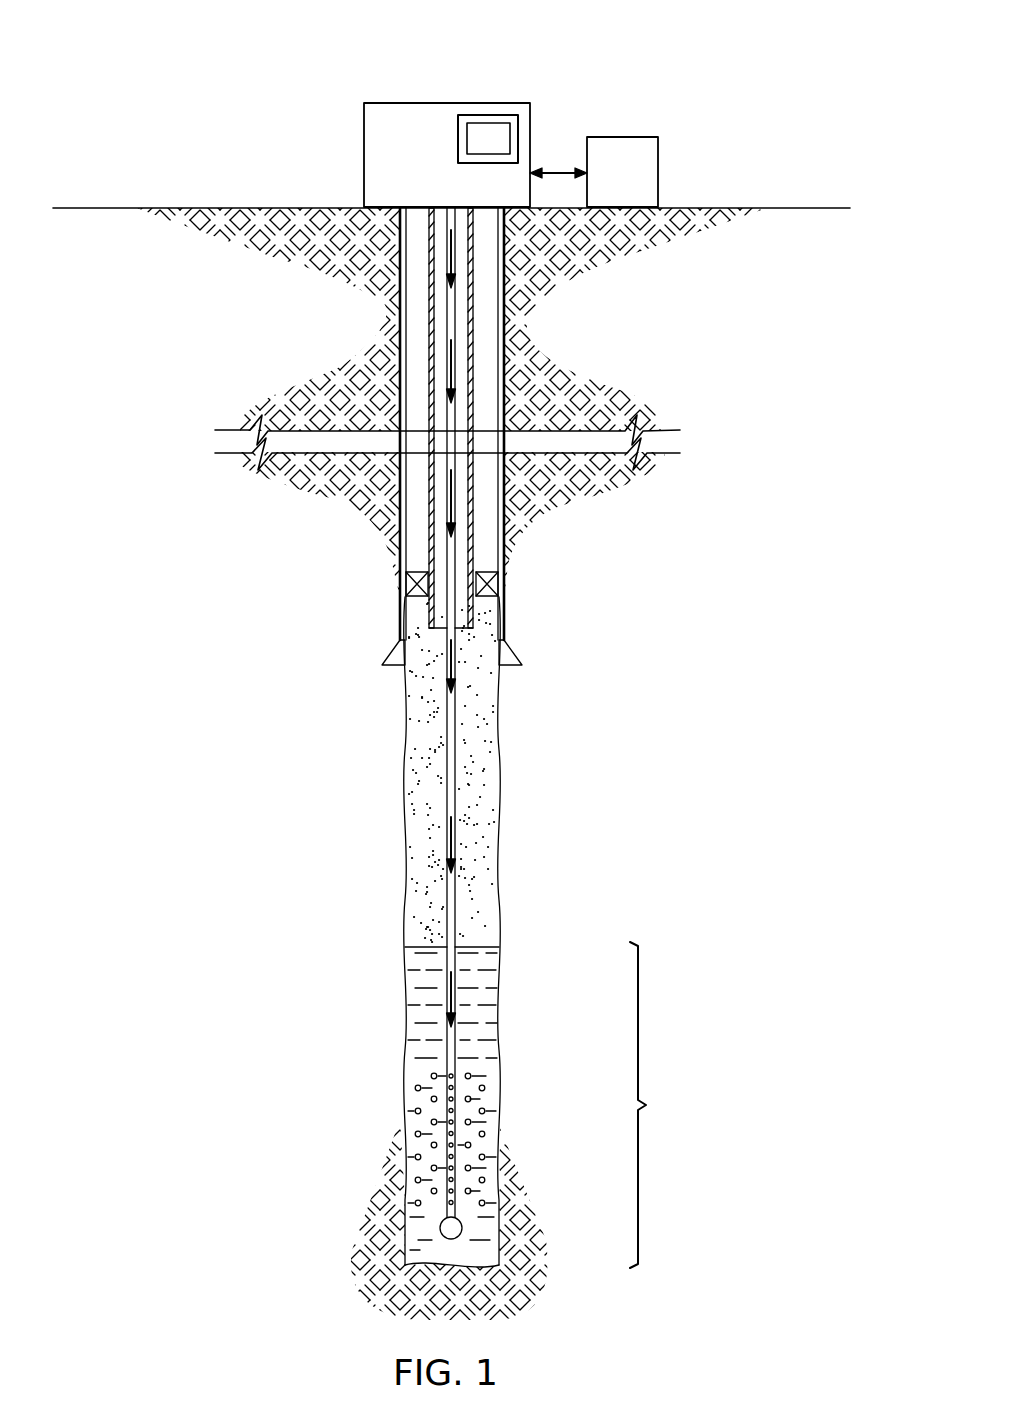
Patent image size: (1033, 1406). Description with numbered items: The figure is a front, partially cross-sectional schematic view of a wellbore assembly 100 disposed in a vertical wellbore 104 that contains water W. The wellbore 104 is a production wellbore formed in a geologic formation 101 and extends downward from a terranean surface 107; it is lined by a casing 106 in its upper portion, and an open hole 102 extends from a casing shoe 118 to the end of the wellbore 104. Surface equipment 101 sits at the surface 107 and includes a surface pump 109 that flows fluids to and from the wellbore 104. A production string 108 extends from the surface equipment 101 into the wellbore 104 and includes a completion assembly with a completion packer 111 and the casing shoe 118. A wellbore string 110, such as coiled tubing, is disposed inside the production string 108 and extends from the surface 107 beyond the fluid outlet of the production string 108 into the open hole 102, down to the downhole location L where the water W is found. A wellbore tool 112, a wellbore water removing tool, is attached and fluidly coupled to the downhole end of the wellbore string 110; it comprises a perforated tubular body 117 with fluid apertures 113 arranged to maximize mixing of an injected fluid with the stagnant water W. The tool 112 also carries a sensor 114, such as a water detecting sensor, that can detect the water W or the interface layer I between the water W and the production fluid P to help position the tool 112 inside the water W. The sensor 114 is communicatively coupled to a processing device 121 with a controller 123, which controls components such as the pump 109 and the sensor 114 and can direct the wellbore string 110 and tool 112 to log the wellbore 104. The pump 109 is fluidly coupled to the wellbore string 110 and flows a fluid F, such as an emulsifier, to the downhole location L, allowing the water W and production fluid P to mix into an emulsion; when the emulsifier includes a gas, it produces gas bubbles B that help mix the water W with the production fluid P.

The wellbore assembly 100 is at (212, 78).
The surface equipment 101 is at (364, 157).
The open hole 102 is at (388, 776).
The wellbore 104 is at (305, 348).
The casing 106 is at (500, 511).
The surface 107 is at (722, 207).
The production string 108 is at (472, 320).
The surface pump 109 is at (623, 137).
The wellbore string 110 is at (447, 327).
The completion packer 111 is at (406, 583).
The wellbore tool 112 is at (447, 1062).
The fluid apertures 113 is at (443, 1150).
The sensor 114 is at (465, 1220).
The perforated tubular body 117 is at (456, 1110).
The casing shoe 118 is at (392, 648).
The processing device 121 is at (502, 115).
The controller 123 is at (466, 137).
The fluid F is at (447, 502).
The production fluid P is at (472, 824).
The interface layer I is at (427, 945).
The water W is at (472, 1004).
The gas bubbles B is at (490, 1188).
The downhole location L is at (647, 1105).